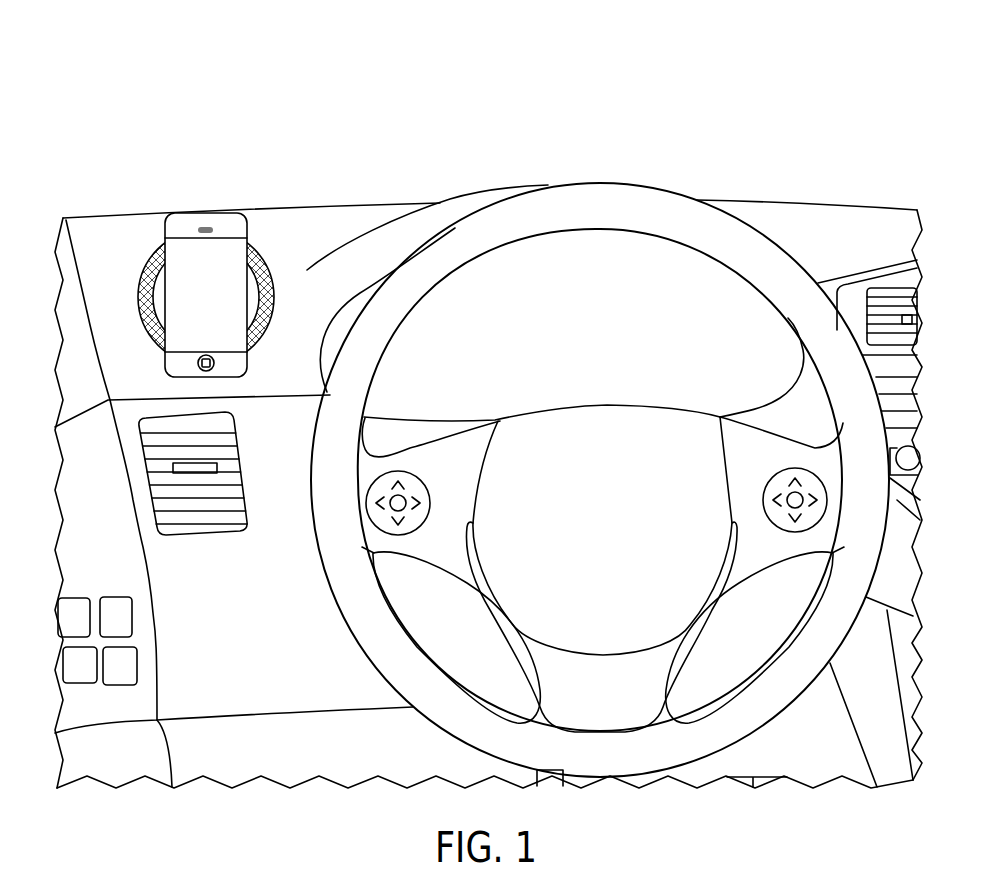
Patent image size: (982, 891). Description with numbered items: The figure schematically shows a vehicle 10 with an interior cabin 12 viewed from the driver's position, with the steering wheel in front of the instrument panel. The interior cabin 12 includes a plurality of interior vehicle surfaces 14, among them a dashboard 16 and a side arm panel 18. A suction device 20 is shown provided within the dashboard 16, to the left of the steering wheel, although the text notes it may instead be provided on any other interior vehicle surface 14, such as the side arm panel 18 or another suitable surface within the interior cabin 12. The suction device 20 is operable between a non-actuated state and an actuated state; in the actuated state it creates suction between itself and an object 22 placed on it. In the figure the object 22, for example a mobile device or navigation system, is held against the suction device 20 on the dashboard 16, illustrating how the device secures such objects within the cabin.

The vehicle 10 is at (100, 118).
The interior cabin 12 is at (252, 685).
The interior vehicle surfaces 14 is at (84, 230).
The dashboard 16 is at (348, 217).
The side arm panel 18 is at (73, 498).
The suction device 20 is at (117, 296).
The object 22 is at (233, 247).